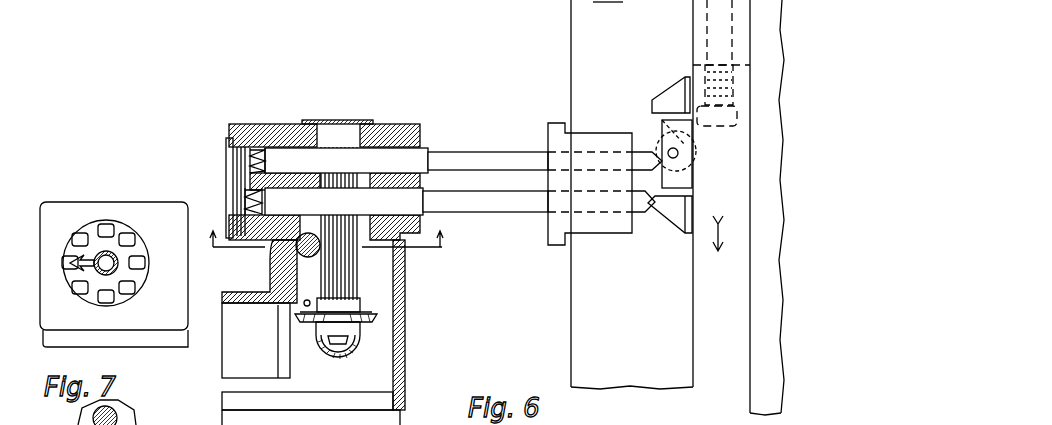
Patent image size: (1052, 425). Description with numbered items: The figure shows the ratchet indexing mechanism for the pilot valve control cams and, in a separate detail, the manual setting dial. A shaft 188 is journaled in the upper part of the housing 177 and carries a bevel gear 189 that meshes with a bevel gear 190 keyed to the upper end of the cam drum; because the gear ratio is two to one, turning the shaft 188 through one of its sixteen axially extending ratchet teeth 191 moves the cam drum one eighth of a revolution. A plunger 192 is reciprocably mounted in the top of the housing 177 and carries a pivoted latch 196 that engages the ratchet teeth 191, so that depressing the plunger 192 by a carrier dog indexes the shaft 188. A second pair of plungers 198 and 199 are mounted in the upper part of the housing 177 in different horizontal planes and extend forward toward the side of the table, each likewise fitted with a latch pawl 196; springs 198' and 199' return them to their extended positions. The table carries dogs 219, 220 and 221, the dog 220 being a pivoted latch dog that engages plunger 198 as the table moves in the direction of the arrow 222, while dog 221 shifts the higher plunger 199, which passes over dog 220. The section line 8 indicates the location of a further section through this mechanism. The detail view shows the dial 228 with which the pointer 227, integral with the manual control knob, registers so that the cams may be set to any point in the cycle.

In FIG. 6, the housing 177 is at (382, 124).
In FIG. 6, the shaft 188 is at (352, 288).
In FIG. 6, the bevel gear 189 is at (378, 318).
In FIG. 6, the bevel gear 190 is at (356, 355).
In FIG. 6, the ratchet teeth 191 is at (350, 262).
In FIG. 6, the plunger 192 is at (300, 255).
In FIG. 6, the pivoted latch 196 is at (300, 265).
In FIG. 6, the plunger 198 is at (460, 212).
In FIG. 6, the plunger 199 is at (463, 149).
In FIG. 6, the spring 198' is at (222, 193).
In FIG. 6, the spring 199' is at (224, 152).
In FIG. 6, the dog 219 is at (678, 220).
In FIG. 6, the dog 220 is at (676, 181).
In FIG. 6, the dog 221 is at (660, 95).
In FIG. 6, the arrow 222 is at (713, 238).
In FIG. 7, the pointer 227 is at (85, 270).
In FIG. 7, the dial 228 is at (88, 225).
In FIG. 6, the section line 8 is at (323, 251).